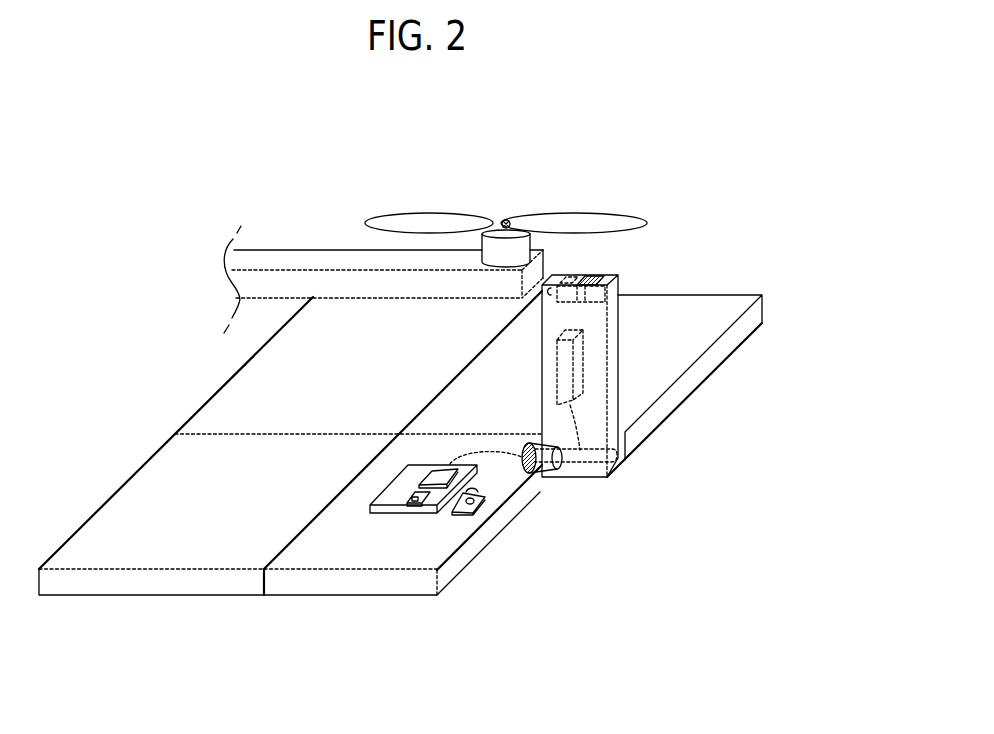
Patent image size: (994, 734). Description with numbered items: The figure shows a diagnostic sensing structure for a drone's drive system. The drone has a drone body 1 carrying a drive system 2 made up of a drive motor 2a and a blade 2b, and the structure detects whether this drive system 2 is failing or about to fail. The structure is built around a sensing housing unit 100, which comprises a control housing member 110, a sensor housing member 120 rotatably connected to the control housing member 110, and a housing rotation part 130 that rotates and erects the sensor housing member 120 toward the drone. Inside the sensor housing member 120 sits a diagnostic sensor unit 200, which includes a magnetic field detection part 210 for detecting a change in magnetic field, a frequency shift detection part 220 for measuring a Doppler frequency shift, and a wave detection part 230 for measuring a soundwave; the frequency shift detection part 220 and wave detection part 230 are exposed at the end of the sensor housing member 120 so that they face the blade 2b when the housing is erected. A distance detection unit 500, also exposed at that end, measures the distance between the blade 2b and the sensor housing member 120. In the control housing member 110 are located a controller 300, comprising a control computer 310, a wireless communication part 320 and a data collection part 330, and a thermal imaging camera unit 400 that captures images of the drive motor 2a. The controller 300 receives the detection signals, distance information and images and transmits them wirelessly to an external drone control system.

The drone body 1 is at (286, 260).
The drive system 2 is at (506, 172).
The drive motor 2a is at (495, 252).
The blade 2b is at (574, 178).
The sensing housing unit 100 is at (513, 467).
The control housing member 110 is at (507, 507).
The sensor housing member 120 is at (597, 470).
The housing rotation part 130 is at (530, 473).
The diagnostic sensor unit 200 is at (725, 354).
The magnetic field detection part 210 is at (570, 372).
The frequency shift detection part 220 is at (590, 294).
The wave detection part 230 is at (588, 276).
The controller 300 is at (368, 588).
The control computer 310 is at (438, 474).
The wireless communication part 320 is at (452, 508).
The data collection part 330 is at (412, 498).
The thermal imaging camera unit 400 is at (456, 517).
The distance detection unit 500 is at (549, 286).